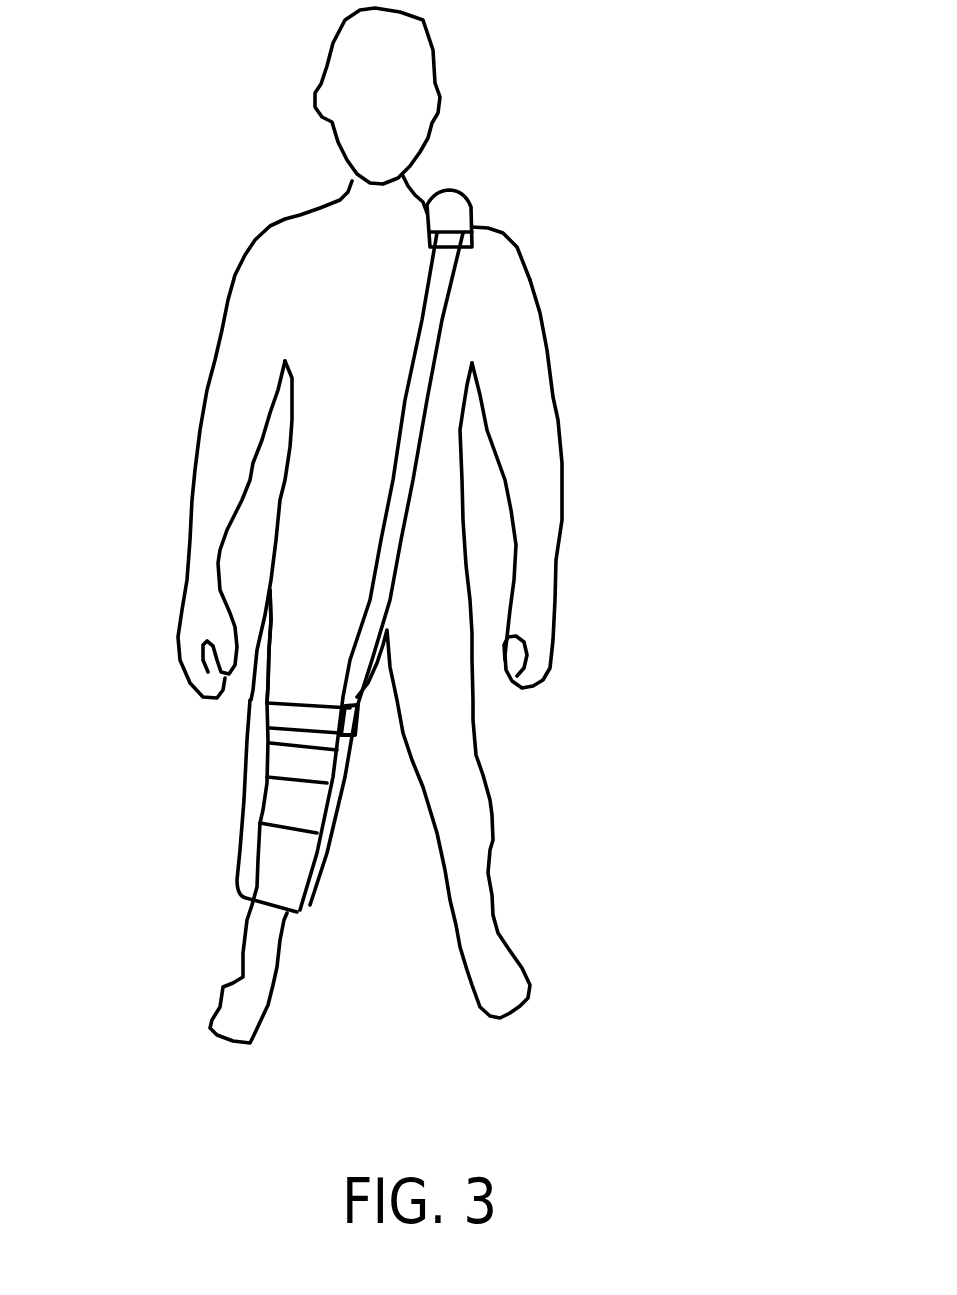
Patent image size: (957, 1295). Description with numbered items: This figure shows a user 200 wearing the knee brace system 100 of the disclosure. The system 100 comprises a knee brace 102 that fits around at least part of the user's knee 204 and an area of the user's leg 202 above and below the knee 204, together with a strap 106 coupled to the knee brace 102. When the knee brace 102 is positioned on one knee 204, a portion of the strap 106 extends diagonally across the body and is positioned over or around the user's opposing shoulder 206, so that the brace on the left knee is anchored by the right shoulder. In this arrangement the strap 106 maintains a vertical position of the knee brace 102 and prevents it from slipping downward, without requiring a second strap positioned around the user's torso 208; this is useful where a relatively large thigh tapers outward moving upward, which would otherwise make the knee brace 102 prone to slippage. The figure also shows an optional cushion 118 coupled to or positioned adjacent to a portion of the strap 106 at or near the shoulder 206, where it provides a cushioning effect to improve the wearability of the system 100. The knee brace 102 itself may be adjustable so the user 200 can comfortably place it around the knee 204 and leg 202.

The system 100 is at (367, 535).
The knee brace 102 is at (270, 872).
The strap 106 is at (397, 505).
The cushion 118 is at (452, 205).
The user 200 is at (437, 525).
The leg 202 is at (305, 667).
The knee 204 is at (287, 758).
The shoulder 206 is at (500, 243).
The torso 208 is at (342, 410).